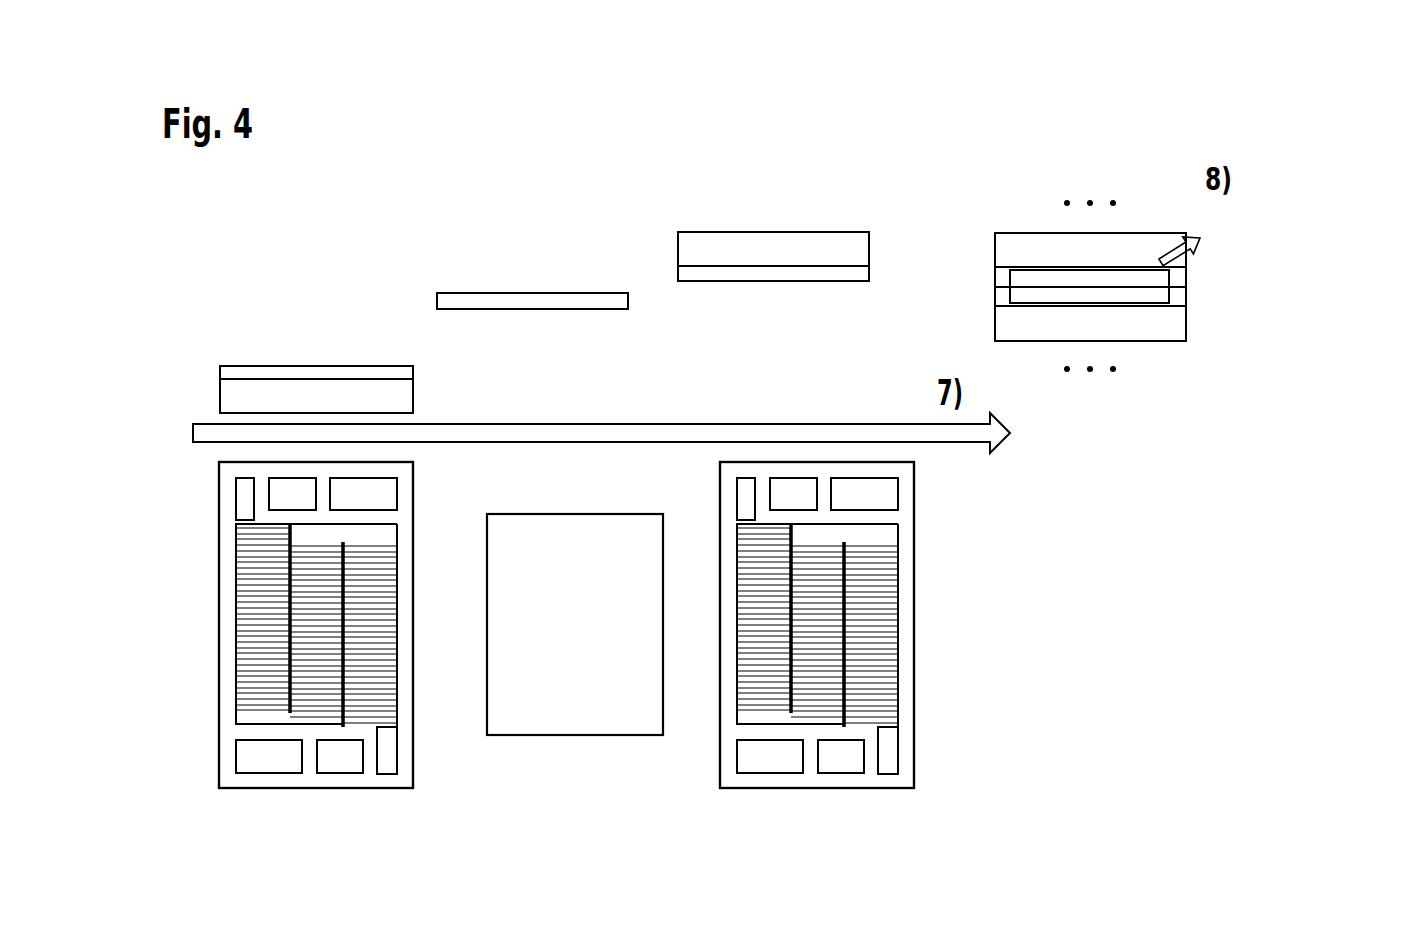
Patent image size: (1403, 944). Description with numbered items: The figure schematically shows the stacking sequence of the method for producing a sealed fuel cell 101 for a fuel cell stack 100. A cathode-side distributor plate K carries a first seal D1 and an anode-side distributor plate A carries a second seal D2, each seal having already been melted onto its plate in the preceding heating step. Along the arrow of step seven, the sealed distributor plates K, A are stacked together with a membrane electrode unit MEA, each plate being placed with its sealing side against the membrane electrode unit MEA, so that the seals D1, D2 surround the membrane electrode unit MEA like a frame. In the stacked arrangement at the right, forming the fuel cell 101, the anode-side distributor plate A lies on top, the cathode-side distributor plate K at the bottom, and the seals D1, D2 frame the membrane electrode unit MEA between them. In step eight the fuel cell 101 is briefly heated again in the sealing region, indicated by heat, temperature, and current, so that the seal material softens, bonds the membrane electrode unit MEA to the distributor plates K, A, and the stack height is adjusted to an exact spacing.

The fuel cell stack 100 is at (1100, 139).
The fuel cell 101 is at (1310, 200).
The anode-side distributor plate A is at (683, 241).
The cathode-side distributor plate K is at (227, 400).
The first seal D1 is at (227, 373).
The second seal D2 is at (787, 272).
The membrane electrode unit MEA is at (443, 297).